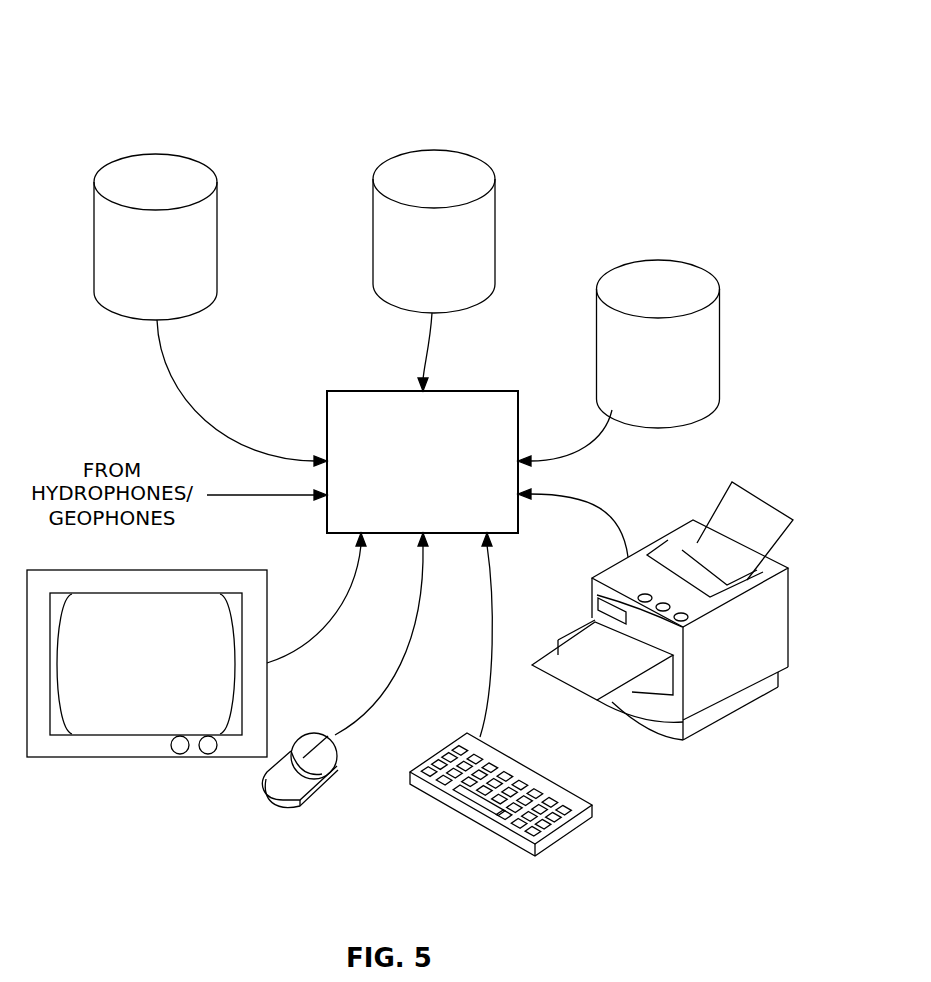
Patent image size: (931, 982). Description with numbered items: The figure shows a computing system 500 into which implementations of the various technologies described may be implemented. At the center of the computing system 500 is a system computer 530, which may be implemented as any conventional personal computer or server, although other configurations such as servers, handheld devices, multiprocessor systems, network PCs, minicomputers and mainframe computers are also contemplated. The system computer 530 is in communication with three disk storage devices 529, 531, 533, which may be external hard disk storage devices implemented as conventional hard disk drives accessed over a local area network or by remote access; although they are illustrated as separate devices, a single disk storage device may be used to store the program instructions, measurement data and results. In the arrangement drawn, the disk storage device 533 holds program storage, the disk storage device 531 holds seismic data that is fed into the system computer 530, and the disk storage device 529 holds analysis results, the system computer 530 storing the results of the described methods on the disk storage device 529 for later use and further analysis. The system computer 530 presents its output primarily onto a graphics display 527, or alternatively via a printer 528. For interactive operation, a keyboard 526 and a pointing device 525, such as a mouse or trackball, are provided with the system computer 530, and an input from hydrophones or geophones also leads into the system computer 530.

The computing system 500 is at (129, 34).
The pointing device 525 is at (280, 807).
The keyboard 526 is at (557, 847).
The graphics display 527 is at (148, 757).
The printer 528 is at (697, 733).
The disk storage device 529 is at (658, 260).
The system computer 530 is at (455, 391).
The disk storage device 531 is at (477, 155).
The disk storage device 533 is at (190, 155).